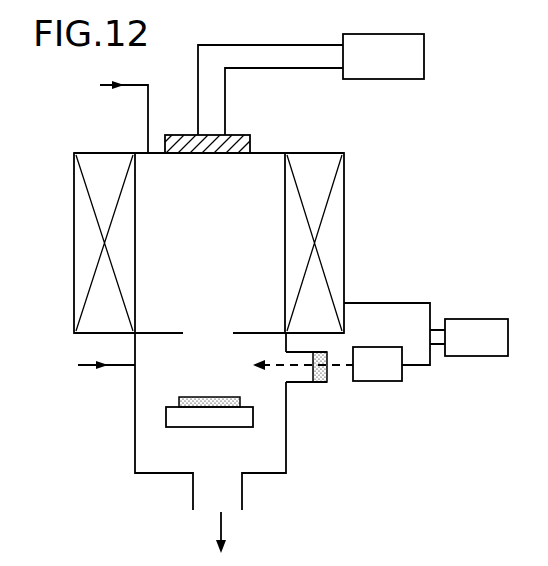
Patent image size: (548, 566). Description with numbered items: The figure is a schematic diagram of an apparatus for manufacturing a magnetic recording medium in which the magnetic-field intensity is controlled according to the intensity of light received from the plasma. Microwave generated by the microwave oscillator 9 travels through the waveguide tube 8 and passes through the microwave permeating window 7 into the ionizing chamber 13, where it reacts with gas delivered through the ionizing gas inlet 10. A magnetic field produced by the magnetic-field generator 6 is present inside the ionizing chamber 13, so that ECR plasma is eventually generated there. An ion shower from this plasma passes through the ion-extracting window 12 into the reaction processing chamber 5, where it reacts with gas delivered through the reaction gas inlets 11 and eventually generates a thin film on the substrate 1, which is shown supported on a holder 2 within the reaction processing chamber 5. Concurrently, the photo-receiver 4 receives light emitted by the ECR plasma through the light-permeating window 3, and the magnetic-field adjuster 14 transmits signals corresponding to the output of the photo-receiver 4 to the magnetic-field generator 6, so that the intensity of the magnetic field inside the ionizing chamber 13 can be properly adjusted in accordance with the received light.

The substrate 1 is at (246, 398).
The substrate holder 2 is at (253, 428).
The light-permeating window 3 is at (327, 352).
The photo-receiver 4 is at (395, 378).
The reaction processing chamber 5 is at (276, 468).
The magnetic-field generator 6 is at (338, 272).
The microwave permeating window 7 is at (252, 142).
The waveguide tube 8 is at (213, 57).
The microwave oscillator 9 is at (387, 40).
The ionizing gas inlet 10 is at (110, 112).
The reaction gas inlet 11 is at (94, 371).
The ion-extracting window 12 is at (175, 336).
The ionizing chamber 13 is at (265, 189).
The magnetic-field adjuster 14 is at (477, 350).